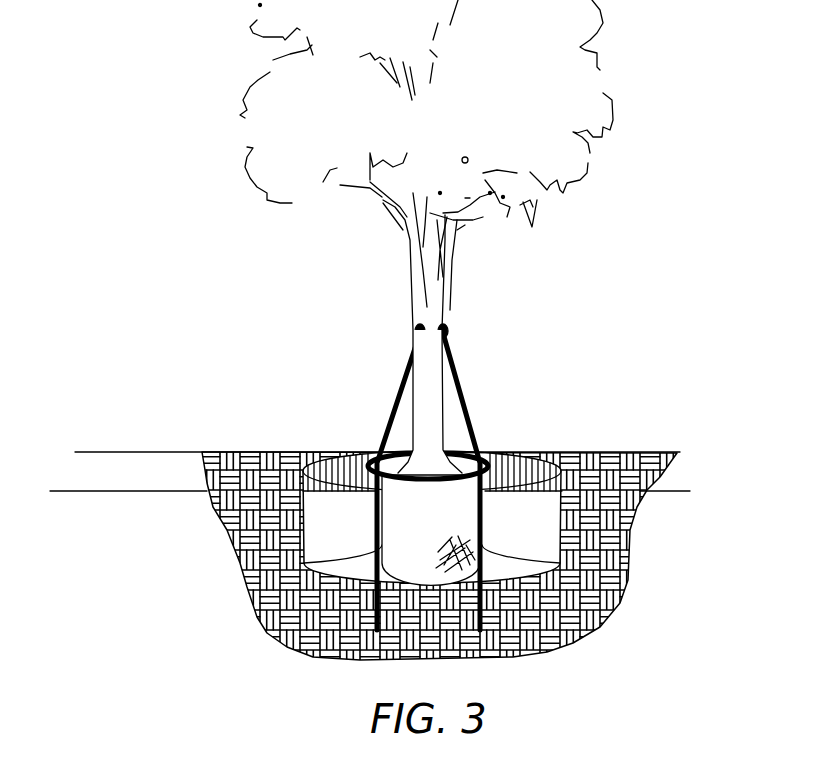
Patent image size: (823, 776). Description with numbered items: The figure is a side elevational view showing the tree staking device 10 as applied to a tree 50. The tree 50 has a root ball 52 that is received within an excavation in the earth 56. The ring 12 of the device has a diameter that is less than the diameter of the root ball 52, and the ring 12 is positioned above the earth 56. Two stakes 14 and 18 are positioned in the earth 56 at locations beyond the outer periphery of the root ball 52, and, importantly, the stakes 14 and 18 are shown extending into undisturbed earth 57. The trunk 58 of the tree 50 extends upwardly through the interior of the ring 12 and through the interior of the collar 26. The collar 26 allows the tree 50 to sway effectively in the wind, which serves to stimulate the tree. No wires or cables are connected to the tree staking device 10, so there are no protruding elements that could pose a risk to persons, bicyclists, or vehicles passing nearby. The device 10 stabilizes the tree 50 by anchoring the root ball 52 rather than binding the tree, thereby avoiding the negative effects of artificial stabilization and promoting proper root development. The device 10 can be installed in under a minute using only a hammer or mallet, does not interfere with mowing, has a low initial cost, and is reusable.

The tree staking device 10 is at (512, 444).
The ring 12 is at (397, 448).
The stake 14 is at (371, 522).
The stake 18 is at (484, 527).
The collar 26 is at (447, 327).
The tree 50 is at (398, 228).
The root ball 52 is at (438, 542).
The earth 56 is at (177, 456).
The undisturbed earth 57 is at (293, 607).
The trunk 58 is at (417, 400).